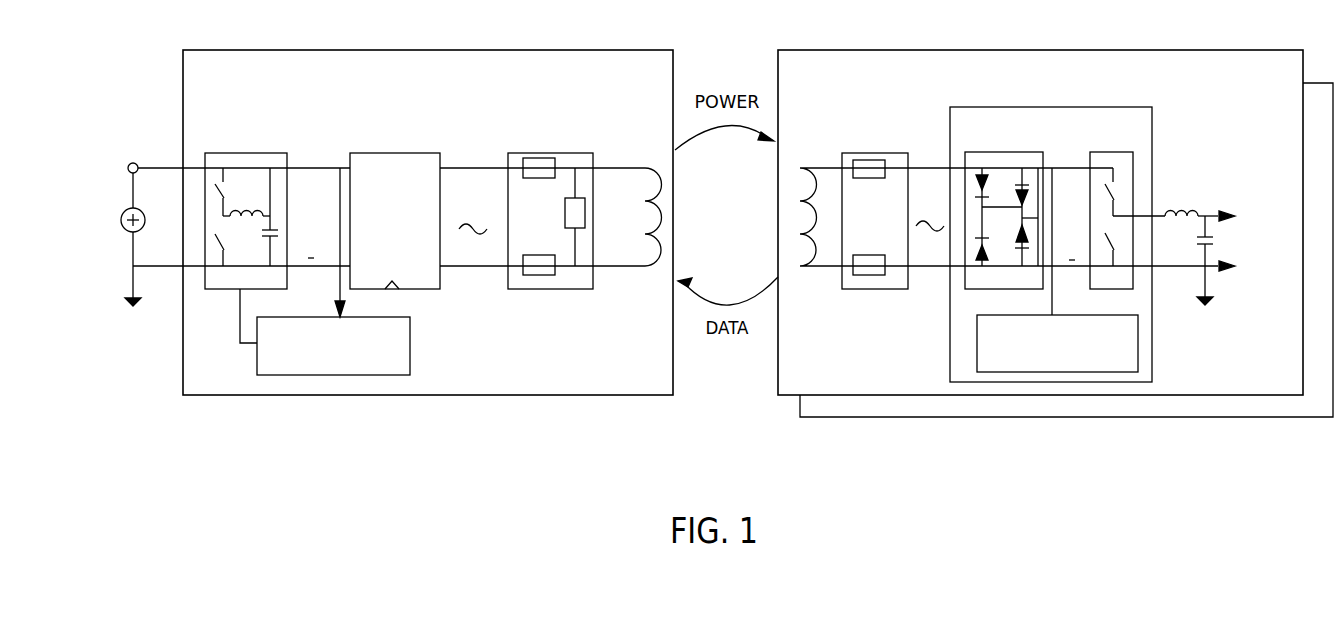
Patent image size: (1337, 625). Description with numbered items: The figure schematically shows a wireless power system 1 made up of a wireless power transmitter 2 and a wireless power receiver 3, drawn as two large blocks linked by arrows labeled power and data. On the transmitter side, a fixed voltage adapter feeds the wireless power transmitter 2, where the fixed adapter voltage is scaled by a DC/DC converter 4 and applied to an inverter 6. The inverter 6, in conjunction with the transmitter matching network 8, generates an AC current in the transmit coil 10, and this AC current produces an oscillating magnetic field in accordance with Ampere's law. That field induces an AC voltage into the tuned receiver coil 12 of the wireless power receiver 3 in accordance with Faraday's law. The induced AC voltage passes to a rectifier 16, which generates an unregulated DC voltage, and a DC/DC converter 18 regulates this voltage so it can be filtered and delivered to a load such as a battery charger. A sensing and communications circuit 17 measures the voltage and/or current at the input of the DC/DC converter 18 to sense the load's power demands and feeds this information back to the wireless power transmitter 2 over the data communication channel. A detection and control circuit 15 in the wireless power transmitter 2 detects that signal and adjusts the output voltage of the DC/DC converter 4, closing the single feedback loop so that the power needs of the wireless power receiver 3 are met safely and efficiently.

The wireless power system 1 is at (1066, 239).
The wireless power transmitter 2 is at (433, 50).
The wireless power receiver 3 is at (882, 50).
The DC/DC converter 4 is at (213, 147).
The inverter 6 is at (442, 285).
The transmitter matching network 8 is at (555, 291).
The transmit coil 10 is at (648, 165).
The receiver coil 12 is at (818, 165).
The detection and control circuit 15 is at (412, 345).
The rectifier 16 is at (982, 267).
The sensing and communications circuit 17 is at (1140, 347).
The DC/DC converter 18 is at (1134, 177).